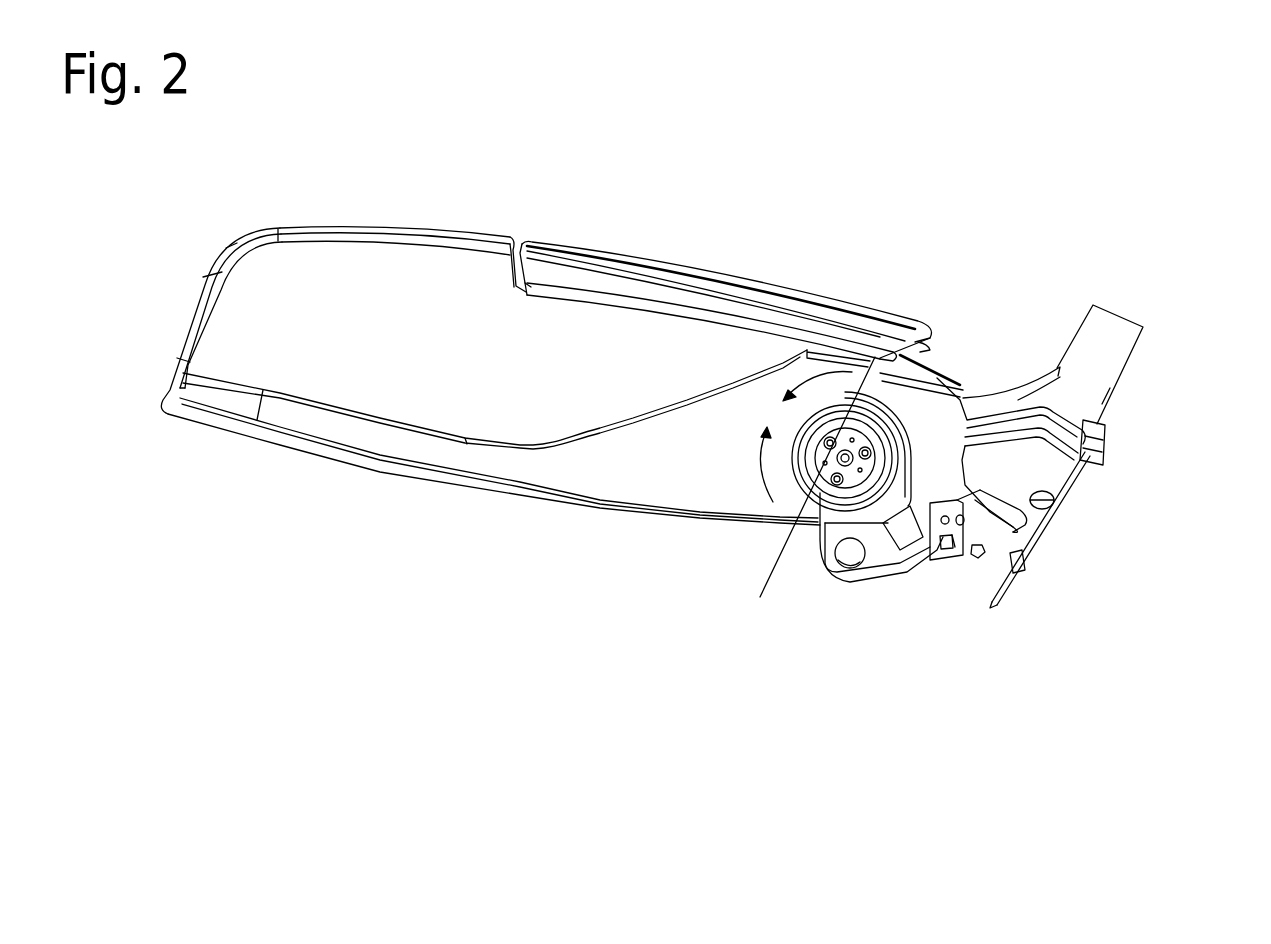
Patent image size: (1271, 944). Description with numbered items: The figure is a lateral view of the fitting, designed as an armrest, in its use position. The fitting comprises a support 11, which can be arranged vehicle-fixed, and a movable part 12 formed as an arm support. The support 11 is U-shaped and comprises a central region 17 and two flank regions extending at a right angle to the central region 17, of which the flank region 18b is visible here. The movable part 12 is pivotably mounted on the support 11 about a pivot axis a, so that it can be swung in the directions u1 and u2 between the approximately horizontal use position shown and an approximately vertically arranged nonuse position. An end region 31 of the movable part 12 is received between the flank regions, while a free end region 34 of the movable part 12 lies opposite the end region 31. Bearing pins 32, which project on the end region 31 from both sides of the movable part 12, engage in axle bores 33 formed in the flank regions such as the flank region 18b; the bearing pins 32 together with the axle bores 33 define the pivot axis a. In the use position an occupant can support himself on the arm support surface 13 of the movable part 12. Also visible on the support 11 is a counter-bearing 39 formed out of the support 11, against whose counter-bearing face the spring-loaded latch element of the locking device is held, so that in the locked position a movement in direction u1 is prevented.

The free end region 34 is at (223, 233).
The arm support surface 13 is at (621, 254).
The movable part 12 is at (688, 285).
The end region 31 is at (937, 363).
The bearing pins 32 is at (880, 428).
The axle bores 33 is at (858, 459).
The support 11 is at (1103, 323).
The central region 17 is at (1115, 392).
The flank region 18b is at (908, 578).
The counter-bearing 39 is at (952, 557).
The pivot axis a is at (814, 492).
The direction u1 is at (817, 389).
The direction u2 is at (752, 464).